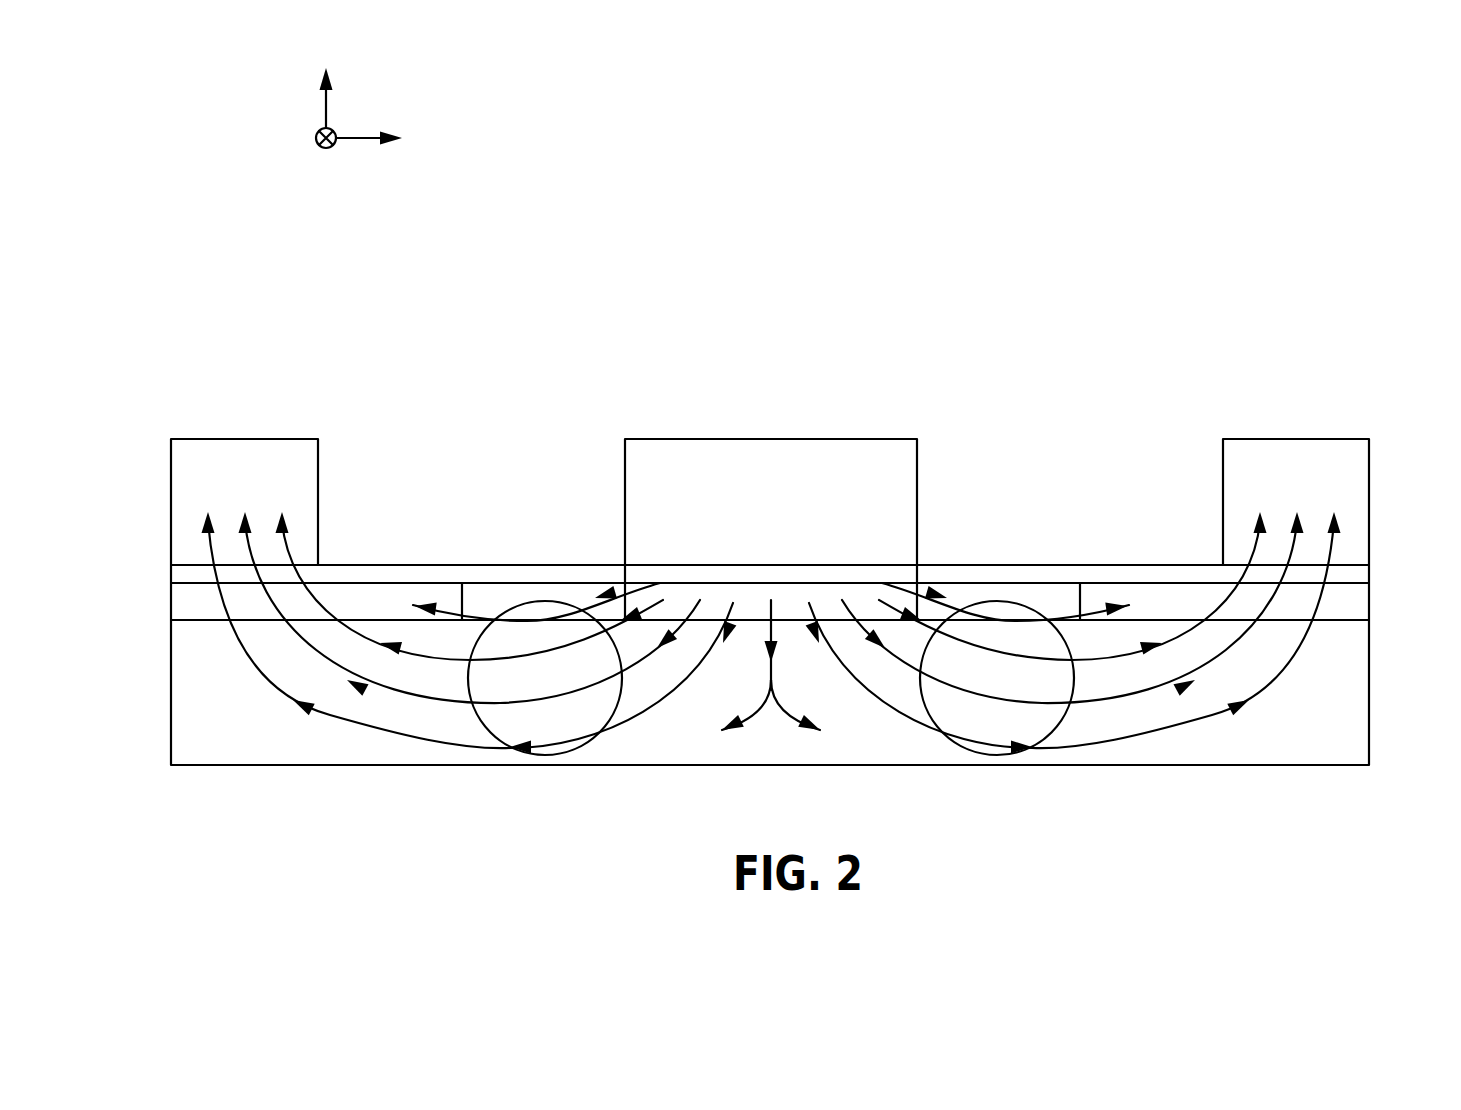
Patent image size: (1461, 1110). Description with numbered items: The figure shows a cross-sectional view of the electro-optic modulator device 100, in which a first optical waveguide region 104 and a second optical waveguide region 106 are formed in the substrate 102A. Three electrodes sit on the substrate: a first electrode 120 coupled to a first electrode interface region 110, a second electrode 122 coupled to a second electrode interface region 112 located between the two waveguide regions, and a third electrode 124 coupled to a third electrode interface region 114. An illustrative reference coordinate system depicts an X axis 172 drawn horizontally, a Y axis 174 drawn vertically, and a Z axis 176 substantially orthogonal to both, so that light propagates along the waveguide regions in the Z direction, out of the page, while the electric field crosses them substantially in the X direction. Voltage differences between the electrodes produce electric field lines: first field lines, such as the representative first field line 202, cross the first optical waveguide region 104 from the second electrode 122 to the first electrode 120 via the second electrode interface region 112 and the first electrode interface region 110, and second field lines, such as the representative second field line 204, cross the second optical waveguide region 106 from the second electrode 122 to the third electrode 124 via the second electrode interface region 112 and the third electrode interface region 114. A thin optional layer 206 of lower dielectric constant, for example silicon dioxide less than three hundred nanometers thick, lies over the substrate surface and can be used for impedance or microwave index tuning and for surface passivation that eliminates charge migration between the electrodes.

The electro-optic modulator device 100 is at (195, 246).
The substrate 102A is at (1370, 695).
The first optical waveguide region 104 is at (537, 757).
The second optical waveguide region 106 is at (1005, 757).
The first electrode interface region 110 is at (180, 603).
The second electrode interface region 112 is at (660, 583).
The third electrode interface region 114 is at (1360, 603).
The first electrode 120 is at (281, 439).
The second electrode 122 is at (858, 439).
The third electrode 124 is at (1330, 439).
The X axis 172 is at (365, 139).
The Y axis 174 is at (326, 95).
The Z axis 176 is at (326, 148).
The first field line 202 is at (527, 620).
The second field line 204 is at (1062, 617).
The layer 206 is at (480, 578).